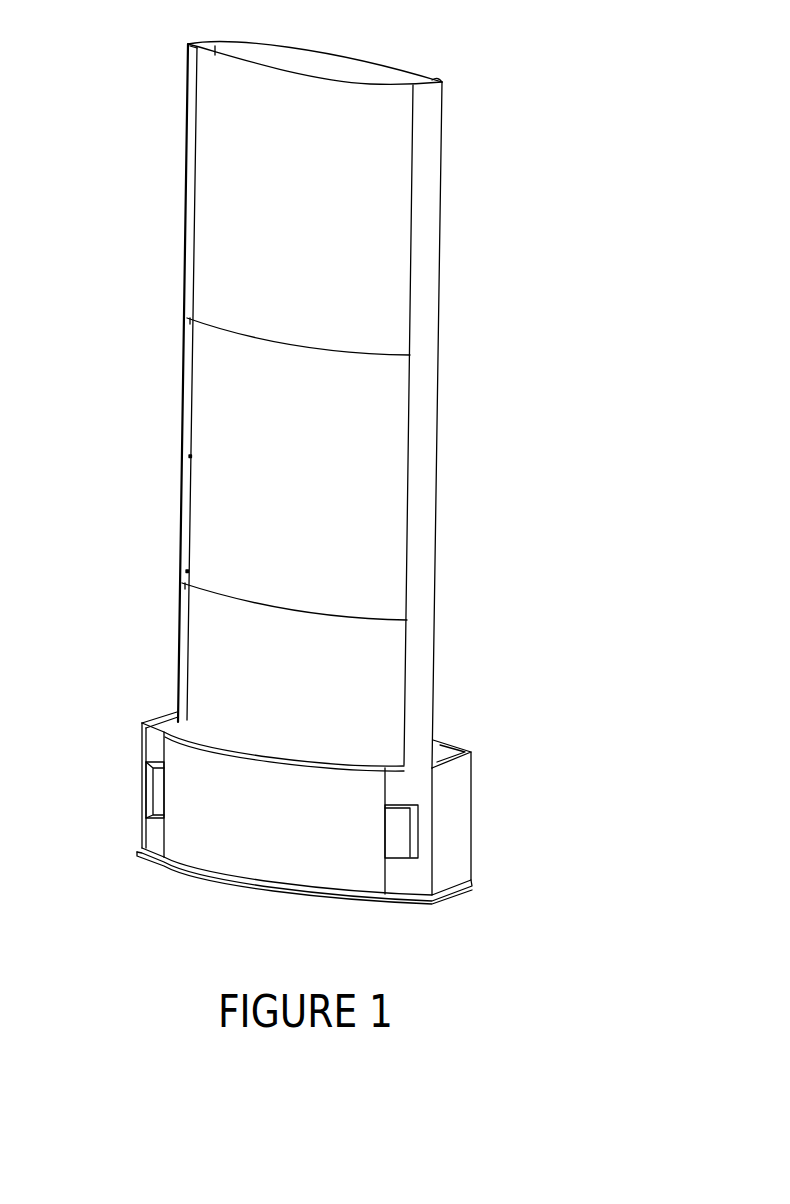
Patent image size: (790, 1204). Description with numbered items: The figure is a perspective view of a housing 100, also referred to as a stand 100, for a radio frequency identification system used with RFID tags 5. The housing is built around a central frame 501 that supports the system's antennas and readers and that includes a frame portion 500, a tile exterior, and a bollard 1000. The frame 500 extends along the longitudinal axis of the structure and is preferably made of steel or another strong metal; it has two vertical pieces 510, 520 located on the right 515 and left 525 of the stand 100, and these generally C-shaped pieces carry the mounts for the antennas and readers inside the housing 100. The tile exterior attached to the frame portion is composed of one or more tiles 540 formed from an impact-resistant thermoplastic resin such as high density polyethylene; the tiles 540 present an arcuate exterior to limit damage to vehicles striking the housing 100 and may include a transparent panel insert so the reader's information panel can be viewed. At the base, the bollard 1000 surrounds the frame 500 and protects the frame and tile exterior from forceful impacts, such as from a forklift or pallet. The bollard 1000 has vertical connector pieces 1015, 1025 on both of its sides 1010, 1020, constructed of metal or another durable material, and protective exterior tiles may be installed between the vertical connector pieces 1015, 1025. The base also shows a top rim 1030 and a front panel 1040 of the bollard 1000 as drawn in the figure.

The RFID tags 5 is at (323, 58).
The housing 100 is at (323, 481).
The central frame 501 is at (341, 393).
The tiles 540 is at (360, 213).
The left 525 is at (187, 263).
The vertical piece 520 is at (187, 292).
The right 515 is at (423, 343).
The vertical piece 510 is at (430, 408).
The frame portion 500 is at (485, 425).
The bollard 1000 is at (315, 827).
The top rim of base 1030 is at (443, 740).
The vertical connector piece 1025 is at (150, 737).
The side 1020 is at (103, 810).
The front panel of base 1040 is at (290, 858).
The side 1010 is at (457, 853).
The vertical connector piece 1015 is at (453, 868).